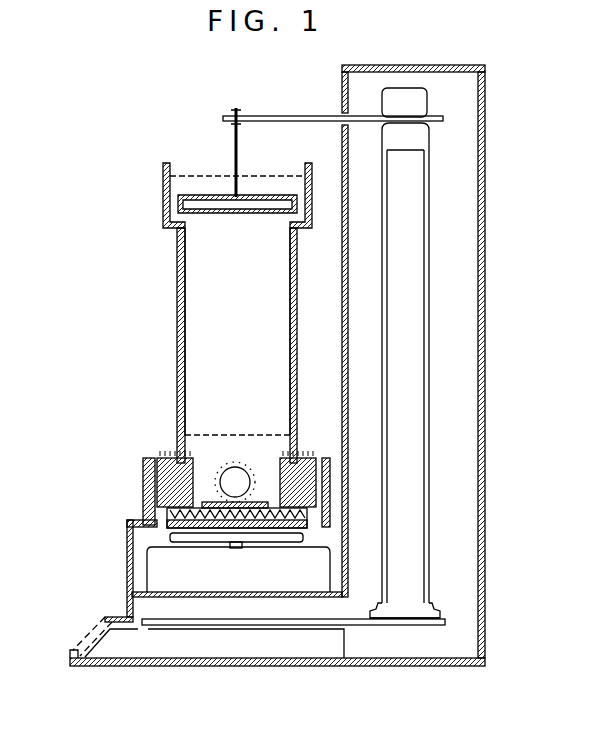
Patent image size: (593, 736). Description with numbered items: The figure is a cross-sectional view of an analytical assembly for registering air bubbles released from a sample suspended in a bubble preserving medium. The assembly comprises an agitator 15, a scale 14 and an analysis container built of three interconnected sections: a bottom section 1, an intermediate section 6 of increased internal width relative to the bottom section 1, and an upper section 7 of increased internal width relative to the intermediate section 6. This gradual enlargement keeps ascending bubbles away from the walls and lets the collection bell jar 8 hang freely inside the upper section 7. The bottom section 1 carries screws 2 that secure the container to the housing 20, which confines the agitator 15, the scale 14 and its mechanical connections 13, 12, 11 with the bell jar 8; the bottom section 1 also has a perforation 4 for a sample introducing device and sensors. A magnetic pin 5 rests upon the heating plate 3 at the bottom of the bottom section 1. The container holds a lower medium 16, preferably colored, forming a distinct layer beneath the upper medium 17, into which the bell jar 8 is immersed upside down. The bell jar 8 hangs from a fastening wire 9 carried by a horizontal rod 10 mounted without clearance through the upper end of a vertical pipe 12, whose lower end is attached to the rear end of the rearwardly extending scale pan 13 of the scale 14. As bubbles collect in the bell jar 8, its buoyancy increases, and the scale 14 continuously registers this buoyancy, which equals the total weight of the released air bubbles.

The bottom section 1 is at (175, 488).
The screws 2 is at (170, 458).
The heating plate 3 is at (178, 530).
The perforation 4 is at (235, 467).
The magnetic pin 5 is at (262, 503).
The intermediate section 6 is at (178, 355).
The upper section 7 is at (163, 195).
The collection bell jar 8 is at (223, 200).
The fastening wire 9 is at (236, 152).
The rod 10 is at (290, 115).
The mechanical connection 11 is at (428, 113).
The pipe 12 is at (412, 236).
The scale pan 13 is at (357, 622).
The scale 14 is at (222, 648).
The agitator 15 is at (162, 573).
The lower medium 16 is at (267, 448).
The upper medium 17 is at (203, 296).
The housing 20 is at (487, 352).